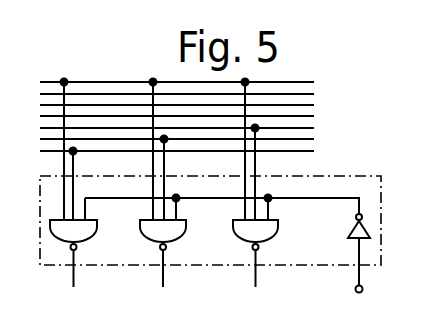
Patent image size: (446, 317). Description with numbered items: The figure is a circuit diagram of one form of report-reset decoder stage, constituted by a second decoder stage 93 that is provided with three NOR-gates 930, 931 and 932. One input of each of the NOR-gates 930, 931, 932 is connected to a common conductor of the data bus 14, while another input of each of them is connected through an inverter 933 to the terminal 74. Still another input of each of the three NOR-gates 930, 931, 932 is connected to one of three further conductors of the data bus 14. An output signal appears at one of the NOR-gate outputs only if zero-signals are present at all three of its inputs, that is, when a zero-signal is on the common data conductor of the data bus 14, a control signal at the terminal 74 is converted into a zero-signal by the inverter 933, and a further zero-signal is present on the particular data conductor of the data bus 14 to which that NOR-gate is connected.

The data bus 14 is at (323, 78).
The second decoder stage 93 is at (382, 201).
The NOR-gate 930 is at (95, 229).
The NOR-gate 931 is at (185, 229).
The NOR-gate 932 is at (277, 229).
The inverter 933 is at (349, 228).
The terminal 74 is at (363, 290).